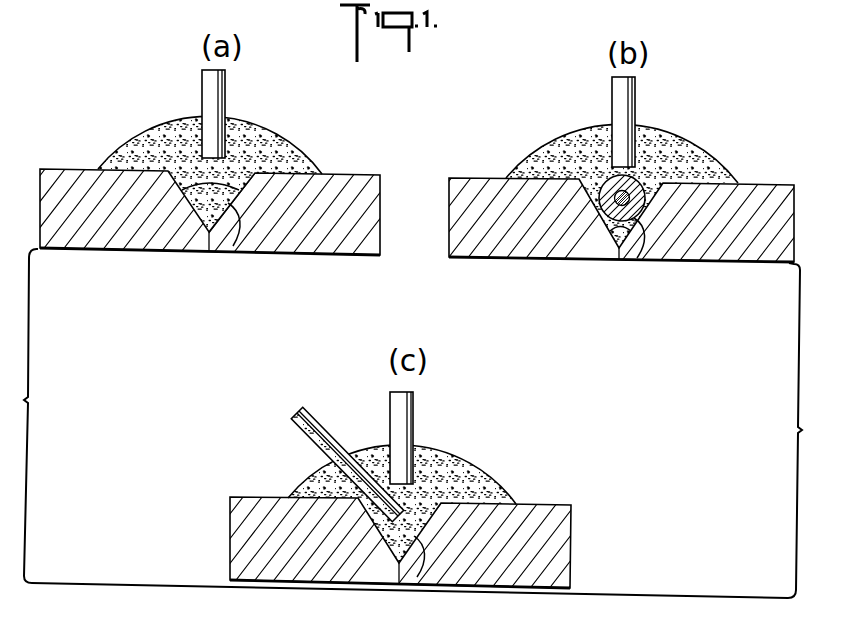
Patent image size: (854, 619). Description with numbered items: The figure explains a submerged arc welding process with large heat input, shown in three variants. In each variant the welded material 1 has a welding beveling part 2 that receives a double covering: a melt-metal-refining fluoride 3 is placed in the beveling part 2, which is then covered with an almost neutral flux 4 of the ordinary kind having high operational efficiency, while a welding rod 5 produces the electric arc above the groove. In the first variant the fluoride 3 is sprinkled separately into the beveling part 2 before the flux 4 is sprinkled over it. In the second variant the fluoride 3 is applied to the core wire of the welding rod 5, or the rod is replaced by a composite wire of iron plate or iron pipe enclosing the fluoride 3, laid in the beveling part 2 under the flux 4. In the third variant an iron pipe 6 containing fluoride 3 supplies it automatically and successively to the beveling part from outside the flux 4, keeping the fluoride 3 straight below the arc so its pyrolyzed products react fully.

The welded material 1 is at (158, 250).
The welding beveling part 2 is at (233, 246).
The fluoride 3 is at (229, 184).
The flux 4 is at (274, 127).
The welding rod 5 is at (239, 79).
The iron pipe 6 is at (333, 434).